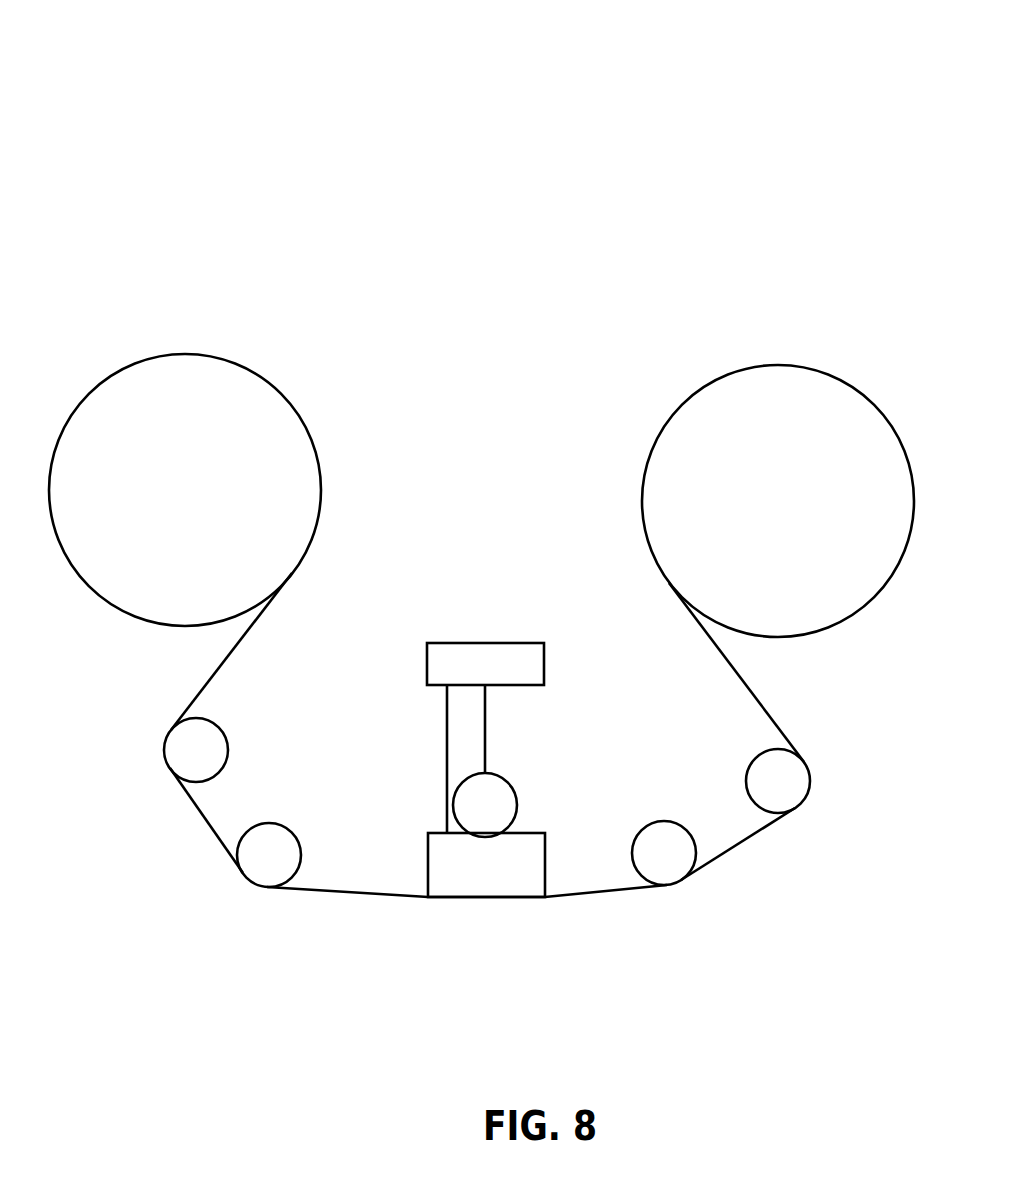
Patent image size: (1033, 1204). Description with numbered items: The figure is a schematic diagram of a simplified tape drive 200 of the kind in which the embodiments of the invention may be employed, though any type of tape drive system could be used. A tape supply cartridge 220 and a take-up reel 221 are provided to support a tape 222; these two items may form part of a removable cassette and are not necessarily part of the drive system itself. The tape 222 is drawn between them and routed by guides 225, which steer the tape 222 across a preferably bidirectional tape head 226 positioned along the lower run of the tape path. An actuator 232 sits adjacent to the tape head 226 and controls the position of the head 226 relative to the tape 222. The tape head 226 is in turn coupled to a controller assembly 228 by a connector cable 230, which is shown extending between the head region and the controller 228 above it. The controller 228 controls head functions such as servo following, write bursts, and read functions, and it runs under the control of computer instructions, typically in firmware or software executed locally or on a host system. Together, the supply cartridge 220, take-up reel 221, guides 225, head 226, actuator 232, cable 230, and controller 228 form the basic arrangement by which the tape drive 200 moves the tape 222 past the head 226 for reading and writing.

The tape drive 200 is at (230, 170).
The tape supply cartridge 220 is at (185, 355).
The take-up reel 221 is at (778, 365).
The tape 222 is at (345, 895).
The guides 225 is at (228, 745).
The tape head 226 is at (548, 863).
The controller assembly 228 is at (483, 643).
The connector cable 230 is at (447, 802).
The actuator 232 is at (510, 780).